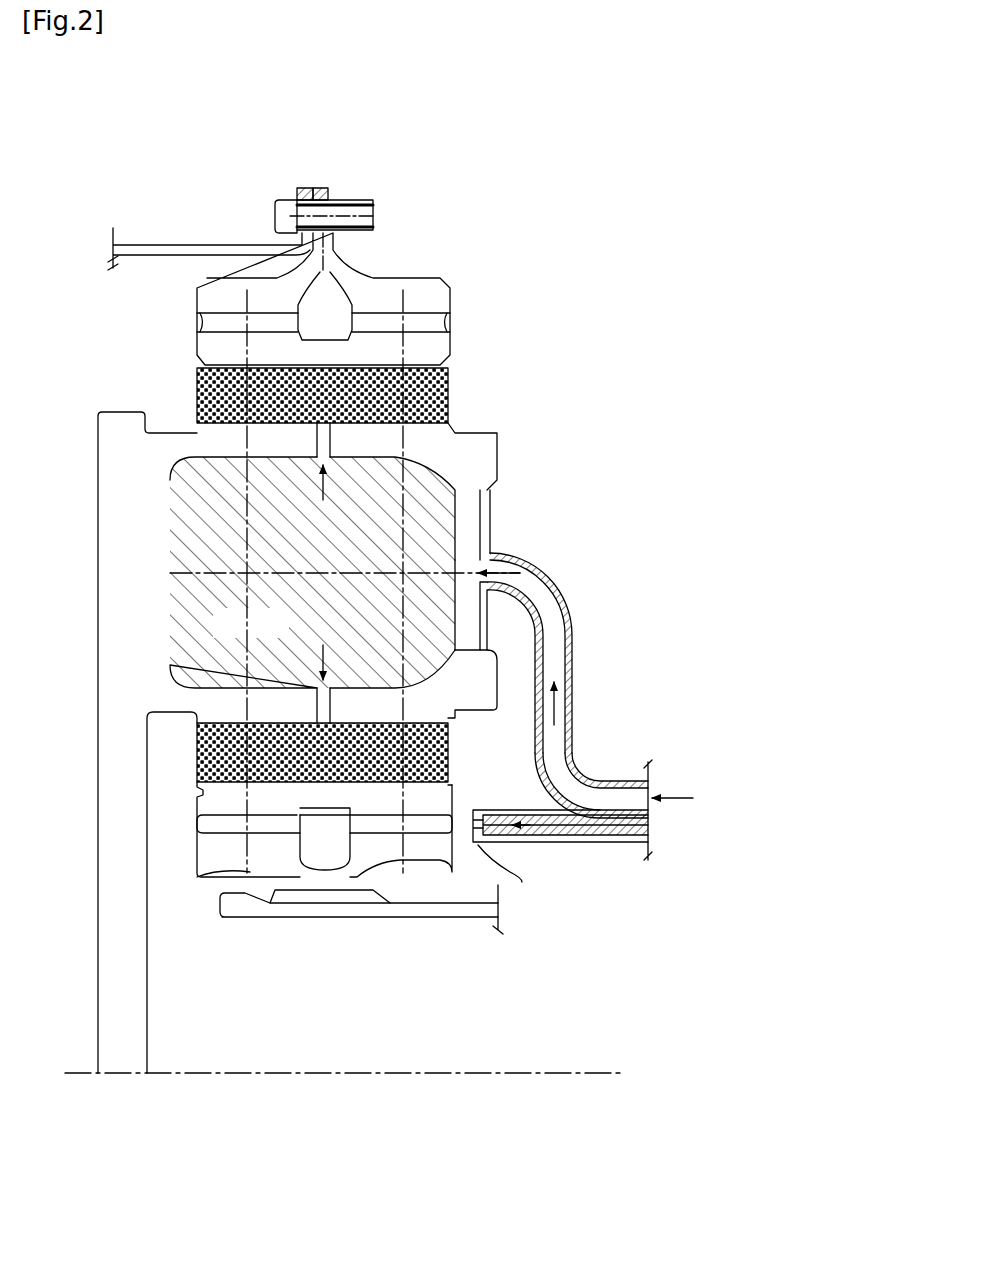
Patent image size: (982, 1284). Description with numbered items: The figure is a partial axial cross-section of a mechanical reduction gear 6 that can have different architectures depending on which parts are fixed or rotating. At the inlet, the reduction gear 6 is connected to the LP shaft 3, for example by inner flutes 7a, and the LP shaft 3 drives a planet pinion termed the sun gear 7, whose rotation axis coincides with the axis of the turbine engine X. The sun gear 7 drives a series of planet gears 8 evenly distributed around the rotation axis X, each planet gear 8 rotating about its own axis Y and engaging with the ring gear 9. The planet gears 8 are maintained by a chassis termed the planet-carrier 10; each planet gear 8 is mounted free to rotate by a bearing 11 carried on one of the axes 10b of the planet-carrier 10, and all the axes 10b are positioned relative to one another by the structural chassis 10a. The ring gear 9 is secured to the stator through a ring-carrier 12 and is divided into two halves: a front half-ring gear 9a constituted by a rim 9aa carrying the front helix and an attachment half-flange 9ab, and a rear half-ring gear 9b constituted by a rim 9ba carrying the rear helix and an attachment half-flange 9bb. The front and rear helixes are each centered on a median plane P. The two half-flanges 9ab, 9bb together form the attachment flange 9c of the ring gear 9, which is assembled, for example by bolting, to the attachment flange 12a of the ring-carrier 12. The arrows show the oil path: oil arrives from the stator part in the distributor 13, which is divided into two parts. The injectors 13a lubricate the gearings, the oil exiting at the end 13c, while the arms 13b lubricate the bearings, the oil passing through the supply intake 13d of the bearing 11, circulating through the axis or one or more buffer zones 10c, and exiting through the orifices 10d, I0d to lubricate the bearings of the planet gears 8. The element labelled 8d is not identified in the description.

The LP shaft 3 is at (359, 958).
The reduction gear 6 is at (592, 375).
The sun gear 7 is at (205, 855).
The inner flutes 7a is at (300, 893).
The planet gears 8 is at (242, 892).
The lower bearing ring 8d is at (205, 823).
The ring gear 9 is at (321, 270).
The front half-ring gear 9a is at (205, 300).
The rim 9aa is at (225, 290).
The attachment half-flange 9ab is at (313, 187).
The rear half-ring gear 9b is at (440, 300).
The rim 9ba is at (395, 285).
The attachment half-flange 9bb is at (335, 187).
The attachment flange 9c is at (326, 125).
The planet-carrier 10 is at (340, 741).
The structural chassis 10a is at (125, 518).
The axes 10b is at (483, 690).
The buffer zones 10c is at (315, 573).
The orifices 10d is at (330, 445).
The orifices I0d is at (305, 708).
The bearing 11 is at (440, 385).
The ring-carrier 12 is at (153, 243).
The attachment flange 12a is at (298, 190).
The distributor 13 is at (625, 707).
The injectors 13a is at (585, 842).
The arms 13b is at (570, 640).
The end 13c is at (517, 889).
The supply intake 13d is at (488, 513).
The median plane P is at (205, 878).
The rotation axis X is at (610, 1073).
The axis Y is at (495, 545).